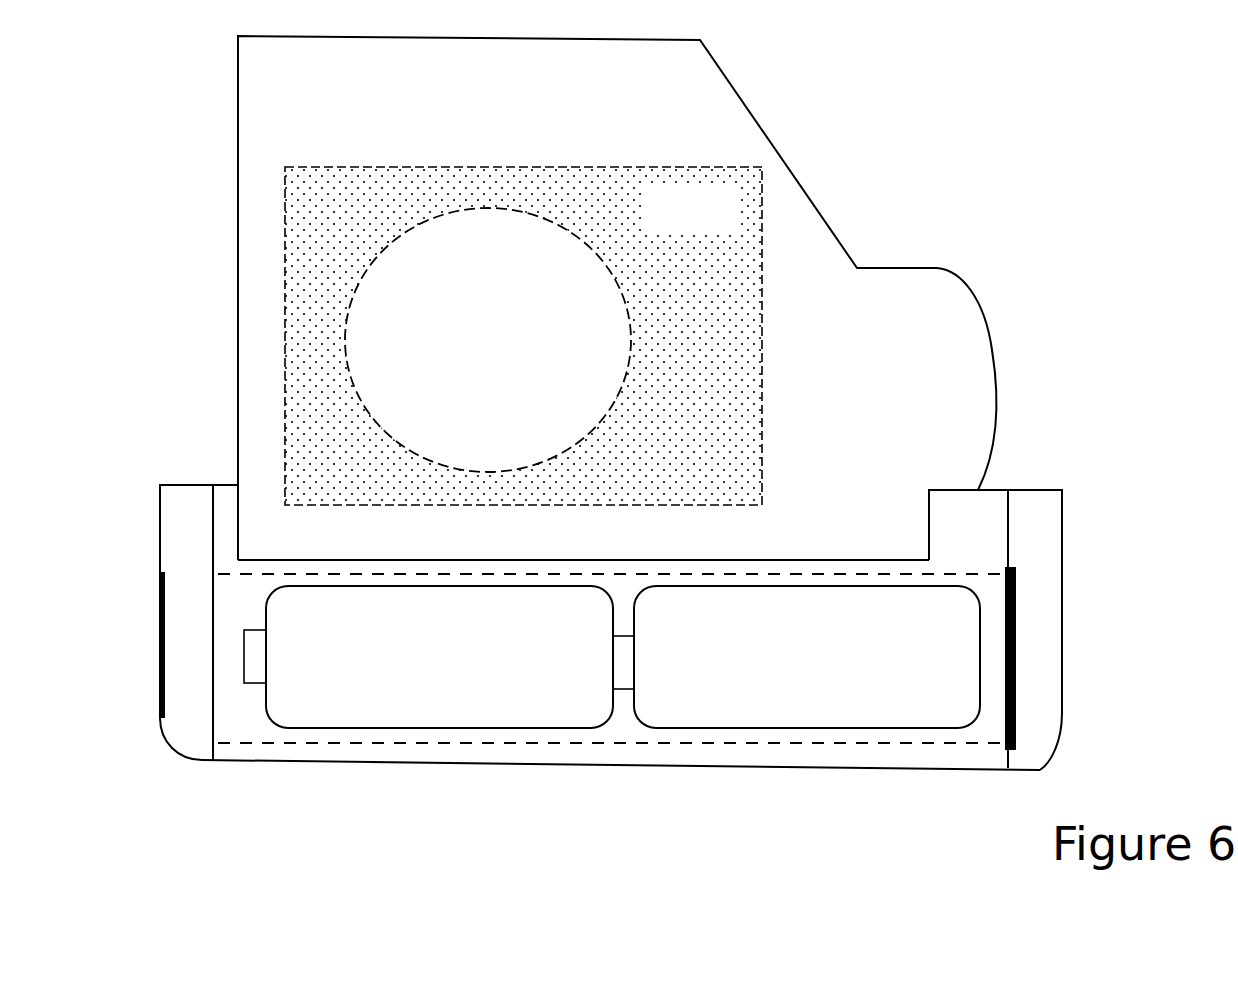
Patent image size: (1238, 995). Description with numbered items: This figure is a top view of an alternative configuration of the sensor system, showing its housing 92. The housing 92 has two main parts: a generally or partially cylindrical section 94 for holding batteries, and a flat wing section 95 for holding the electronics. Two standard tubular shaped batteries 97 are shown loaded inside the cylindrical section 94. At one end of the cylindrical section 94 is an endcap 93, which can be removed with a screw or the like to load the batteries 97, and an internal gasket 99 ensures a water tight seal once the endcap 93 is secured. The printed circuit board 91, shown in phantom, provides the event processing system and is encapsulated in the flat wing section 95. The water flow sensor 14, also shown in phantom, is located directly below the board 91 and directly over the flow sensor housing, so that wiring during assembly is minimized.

The water flow sensor 14 is at (488, 340).
The printed circuit board 91 is at (744, 246).
The housing 92 is at (1100, 317).
The endcap 93 is at (1063, 673).
The cylindrical section 94 is at (436, 765).
The flat wing section 95 is at (587, 298).
The batteries 97 is at (612, 657).
The internal gasket 99 is at (1020, 778).